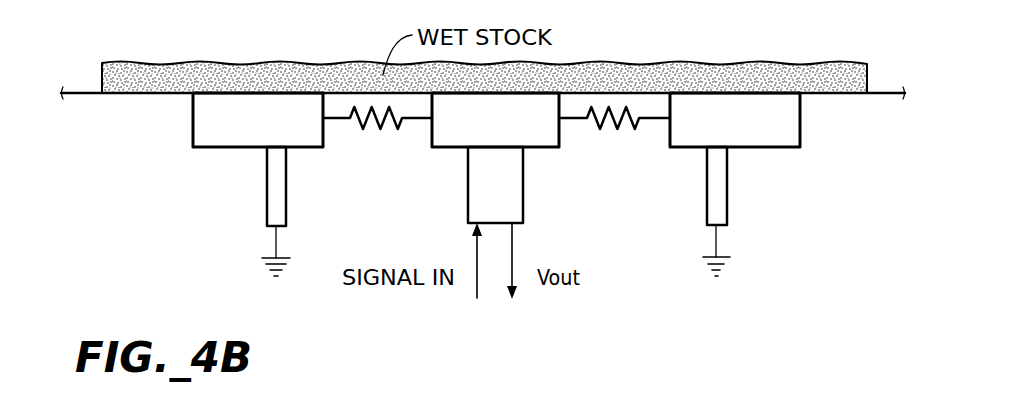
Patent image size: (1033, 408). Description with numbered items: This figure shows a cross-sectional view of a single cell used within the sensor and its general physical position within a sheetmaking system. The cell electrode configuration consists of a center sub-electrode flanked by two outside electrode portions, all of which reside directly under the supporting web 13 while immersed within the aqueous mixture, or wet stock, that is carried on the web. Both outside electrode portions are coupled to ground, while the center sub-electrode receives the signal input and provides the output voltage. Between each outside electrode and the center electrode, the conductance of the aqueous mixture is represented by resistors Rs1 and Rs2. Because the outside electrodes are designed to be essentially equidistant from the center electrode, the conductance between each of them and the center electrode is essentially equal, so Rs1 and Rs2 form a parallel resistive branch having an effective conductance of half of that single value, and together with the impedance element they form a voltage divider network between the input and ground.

The web 13 is at (888, 75).
The resistor Rs1 is at (377, 135).
The resistor Rs2 is at (614, 135).